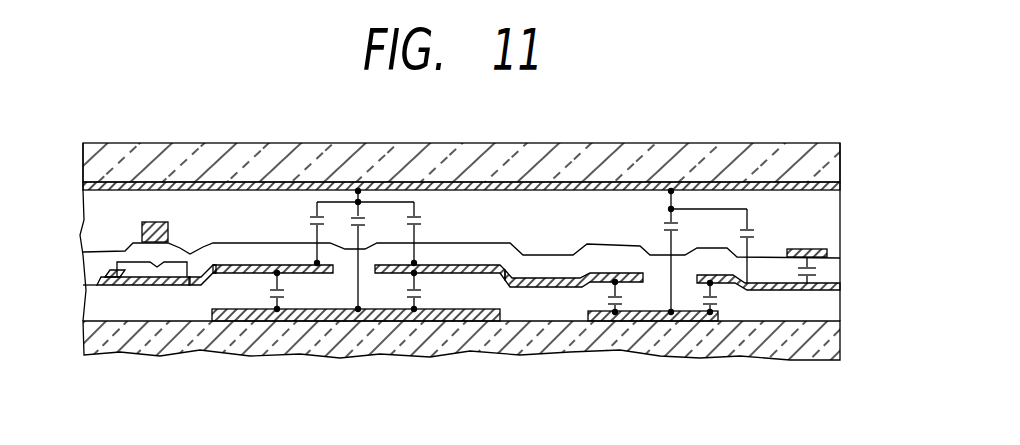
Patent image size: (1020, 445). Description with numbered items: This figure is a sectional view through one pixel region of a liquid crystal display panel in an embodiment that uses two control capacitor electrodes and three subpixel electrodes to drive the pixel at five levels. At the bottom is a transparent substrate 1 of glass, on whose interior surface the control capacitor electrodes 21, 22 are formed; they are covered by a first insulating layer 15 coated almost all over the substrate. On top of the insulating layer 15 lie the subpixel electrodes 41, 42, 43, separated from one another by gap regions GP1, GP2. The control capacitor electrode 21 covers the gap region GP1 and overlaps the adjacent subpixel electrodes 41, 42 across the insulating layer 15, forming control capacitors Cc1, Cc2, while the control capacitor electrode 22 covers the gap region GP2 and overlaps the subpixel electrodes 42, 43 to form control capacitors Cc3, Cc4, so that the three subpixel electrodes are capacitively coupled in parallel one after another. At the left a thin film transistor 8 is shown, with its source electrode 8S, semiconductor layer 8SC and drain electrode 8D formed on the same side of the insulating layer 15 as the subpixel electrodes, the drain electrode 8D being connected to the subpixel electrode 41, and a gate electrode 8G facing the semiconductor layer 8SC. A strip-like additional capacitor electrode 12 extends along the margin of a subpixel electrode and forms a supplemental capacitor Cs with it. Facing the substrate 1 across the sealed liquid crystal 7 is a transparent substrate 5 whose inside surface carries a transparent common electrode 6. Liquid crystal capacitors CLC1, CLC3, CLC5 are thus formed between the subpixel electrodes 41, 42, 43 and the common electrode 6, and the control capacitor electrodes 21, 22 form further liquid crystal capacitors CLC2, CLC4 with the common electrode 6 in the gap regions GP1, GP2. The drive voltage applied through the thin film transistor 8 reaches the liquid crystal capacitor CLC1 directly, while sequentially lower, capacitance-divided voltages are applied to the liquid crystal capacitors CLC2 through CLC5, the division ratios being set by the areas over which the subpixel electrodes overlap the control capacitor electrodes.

The transparent substrate 1 is at (827, 345).
The transparent substrate 5 is at (833, 167).
The transparent common electrode 6 is at (842, 188).
The liquid crystal 7 is at (833, 227).
The first insulating layer 15 is at (830, 307).
The thin film transistor 8 is at (267, 297).
The gate electrode 8G is at (157, 222).
The source electrode 8S is at (113, 287).
The semiconductor layer 8SC is at (153, 287).
The drain electrode 8D is at (182, 287).
The control capacitor electrode 21 is at (100, 275).
The control capacitor electrode 22 is at (587, 313).
The subpixel electrode 41 is at (218, 264).
The subpixel electrode 42 is at (572, 277).
The subpixel electrode 43 is at (760, 274).
The additional capacitor electrode 12 is at (807, 248).
The gap region GP1 is at (350, 266).
The gap region GP2 is at (683, 271).
The liquid crystal capacitor CLC1 is at (293, 234).
The liquid crystal capacitor CLC2 is at (367, 220).
The liquid crystal capacitor CLC3 is at (435, 234).
The liquid crystal capacitor CLC4 is at (642, 225).
The liquid crystal capacitor CLC5 is at (724, 246).
The control capacitor Cc1 is at (293, 291).
The control capacitor Cc2 is at (431, 291).
The control capacitor Cc3 is at (631, 298).
The control capacitor Cc4 is at (727, 301).
The additional capacitor Cs is at (818, 271).